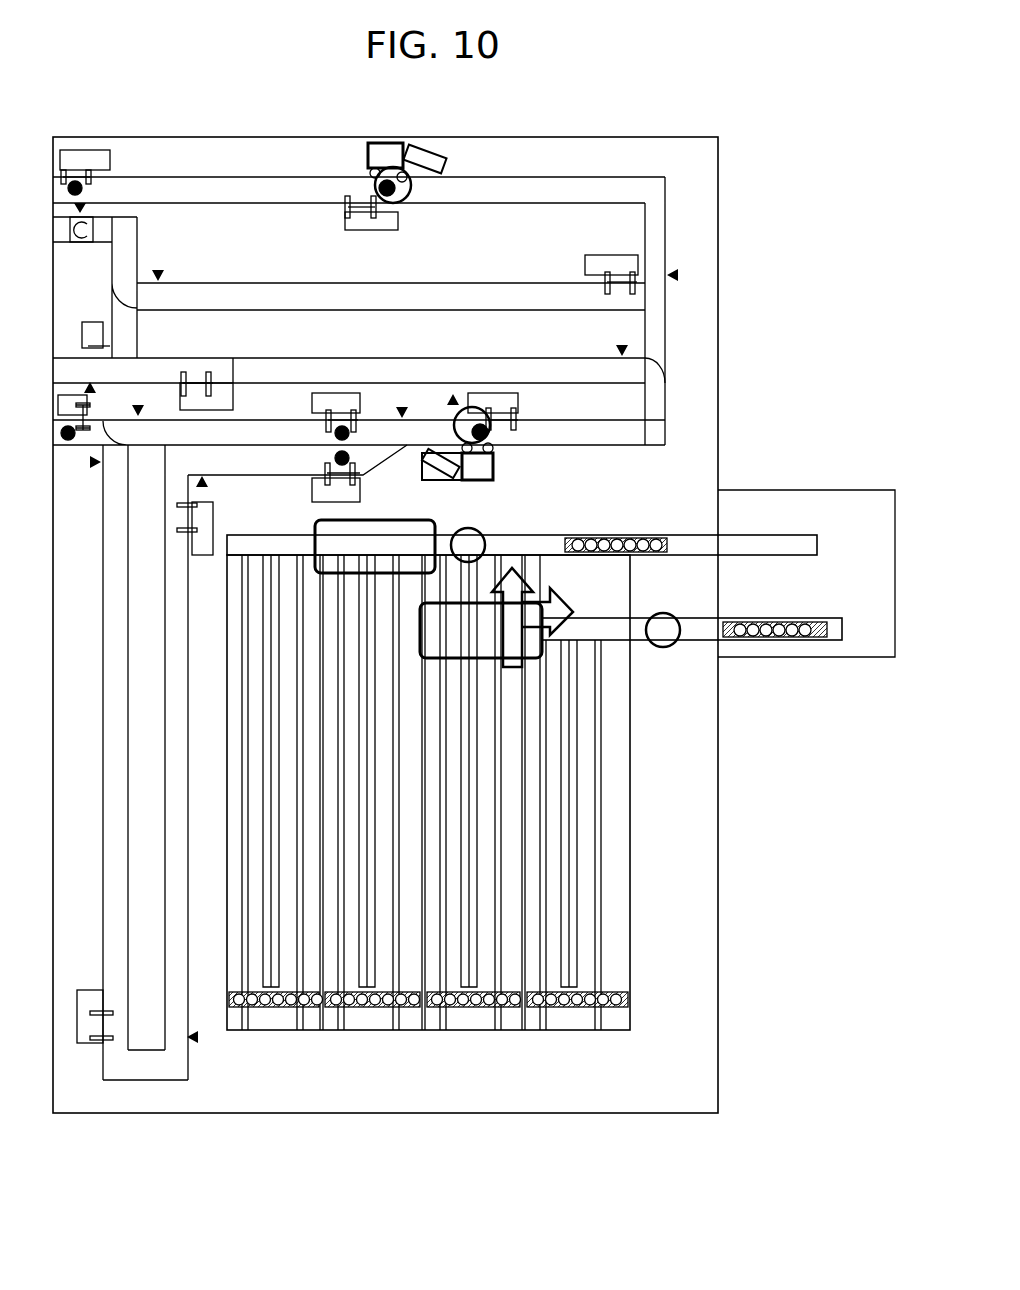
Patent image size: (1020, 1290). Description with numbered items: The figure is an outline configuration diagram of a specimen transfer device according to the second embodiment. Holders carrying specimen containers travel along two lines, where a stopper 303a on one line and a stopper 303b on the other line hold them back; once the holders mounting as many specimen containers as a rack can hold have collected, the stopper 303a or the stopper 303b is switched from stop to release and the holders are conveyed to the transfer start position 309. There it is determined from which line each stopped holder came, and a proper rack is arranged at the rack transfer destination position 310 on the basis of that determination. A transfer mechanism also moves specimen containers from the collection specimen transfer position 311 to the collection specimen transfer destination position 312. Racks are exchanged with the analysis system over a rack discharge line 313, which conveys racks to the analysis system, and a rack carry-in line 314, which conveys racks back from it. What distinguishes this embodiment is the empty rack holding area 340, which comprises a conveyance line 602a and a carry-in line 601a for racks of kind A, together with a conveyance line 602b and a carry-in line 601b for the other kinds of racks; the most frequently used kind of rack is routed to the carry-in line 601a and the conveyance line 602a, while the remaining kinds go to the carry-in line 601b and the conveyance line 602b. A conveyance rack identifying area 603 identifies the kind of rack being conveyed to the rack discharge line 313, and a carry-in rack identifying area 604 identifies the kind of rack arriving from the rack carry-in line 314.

The collection specimen transfer destination position 312 is at (410, 196).
The transfer start position 309 is at (520, 432).
The stopper 303b is at (335, 393).
The stopper 303a is at (362, 492).
The carry-in rack identifying area 604 is at (318, 530).
The rack carry-in line 314 is at (693, 548).
The collection specimen transfer position 311 is at (478, 530).
The rack discharge line 313 is at (752, 658).
The rack transfer destination position 310 is at (672, 616).
The conveyance rack identifying area 603 is at (527, 660).
The empty rack holding area 340 is at (631, 838).
The carry-in line for the rack having rack kind A 601a is at (270, 978).
The carry-in line for the other kinds of racks 601b is at (372, 978).
The conveyance line for the other kinds of racks 602b is at (476, 978).
The conveyance line for the rack having rack kind A 602a is at (580, 978).